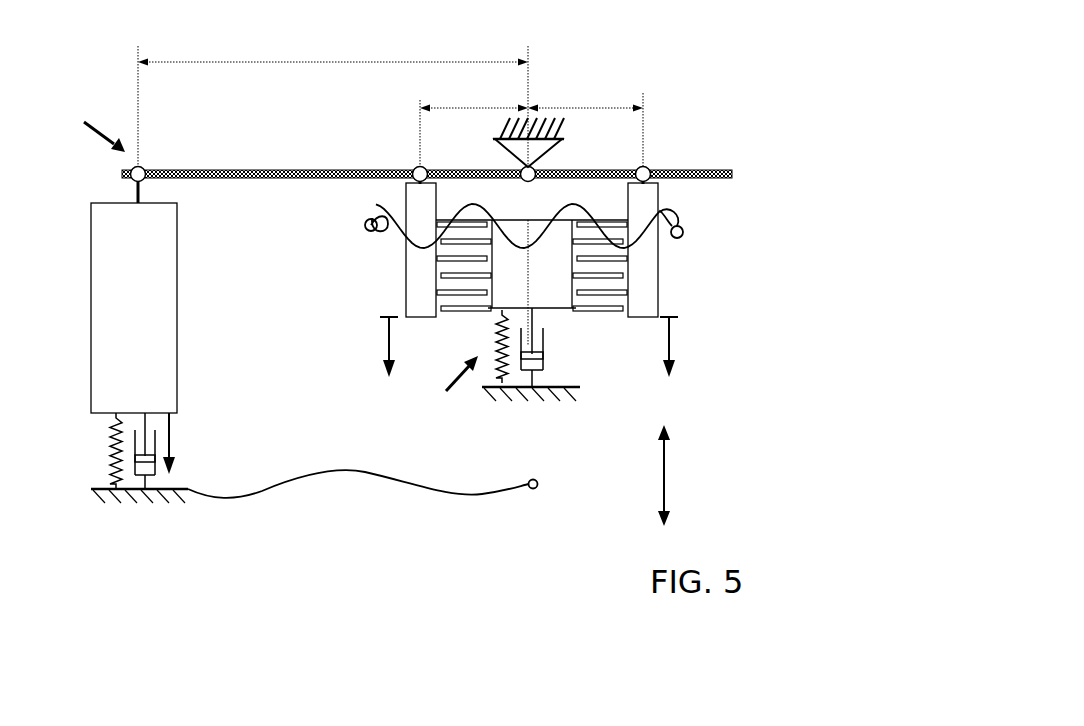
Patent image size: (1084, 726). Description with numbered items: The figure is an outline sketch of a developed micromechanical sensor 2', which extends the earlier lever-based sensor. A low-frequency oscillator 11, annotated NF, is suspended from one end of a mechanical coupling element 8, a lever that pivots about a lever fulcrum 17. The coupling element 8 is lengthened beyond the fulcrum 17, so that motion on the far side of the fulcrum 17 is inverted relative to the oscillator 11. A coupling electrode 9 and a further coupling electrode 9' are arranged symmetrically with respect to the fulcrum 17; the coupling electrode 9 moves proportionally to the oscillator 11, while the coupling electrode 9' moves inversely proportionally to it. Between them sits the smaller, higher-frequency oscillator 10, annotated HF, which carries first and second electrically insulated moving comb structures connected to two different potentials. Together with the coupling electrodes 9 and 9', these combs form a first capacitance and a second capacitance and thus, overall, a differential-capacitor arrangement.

The developed micromechanical sensor 2' is at (421, 266).
The mechanical coupling element 8 is at (240, 170).
The coupling electrode 9 is at (381, 248).
The further coupling electrode 9' is at (710, 241).
The oscillator 10 is at (553, 223).
The oscillator 11 is at (177, 243).
The lever fulcrum 17 is at (535, 163).